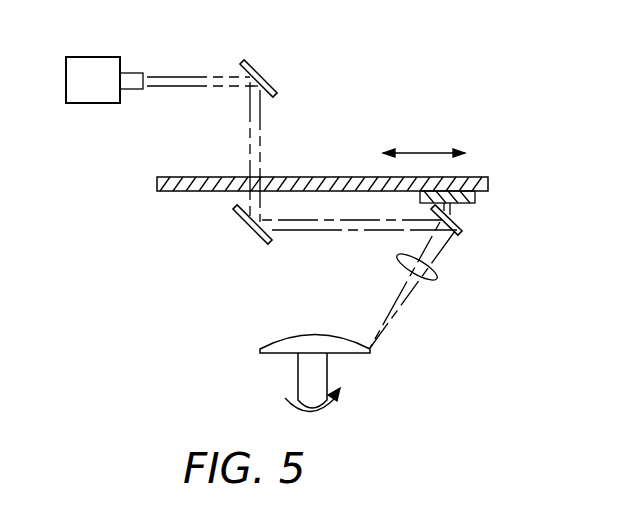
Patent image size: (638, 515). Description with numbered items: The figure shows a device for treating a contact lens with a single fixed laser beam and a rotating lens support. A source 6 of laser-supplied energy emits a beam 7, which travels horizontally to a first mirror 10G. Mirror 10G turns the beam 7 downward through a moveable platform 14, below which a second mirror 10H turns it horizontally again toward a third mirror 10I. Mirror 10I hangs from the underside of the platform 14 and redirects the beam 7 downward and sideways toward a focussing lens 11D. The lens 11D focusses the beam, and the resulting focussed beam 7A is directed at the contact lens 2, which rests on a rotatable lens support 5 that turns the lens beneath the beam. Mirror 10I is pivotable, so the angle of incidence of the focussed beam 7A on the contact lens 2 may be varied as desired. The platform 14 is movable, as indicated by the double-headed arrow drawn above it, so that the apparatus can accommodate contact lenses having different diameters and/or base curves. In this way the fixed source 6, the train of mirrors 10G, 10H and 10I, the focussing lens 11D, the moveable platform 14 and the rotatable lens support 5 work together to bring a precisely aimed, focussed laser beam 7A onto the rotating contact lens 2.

The source of laser-supplied energy 6 is at (96, 57).
The beam 7 is at (197, 76).
The focussed beam 7A is at (384, 332).
The mirror 10G is at (259, 76).
The mirror 10H is at (247, 235).
The mirror 10I is at (463, 226).
The moveable platform 14 is at (474, 177).
The focussing lens 11D is at (428, 277).
The contact lens 2 is at (282, 340).
The rotatable lens support 5 is at (300, 382).